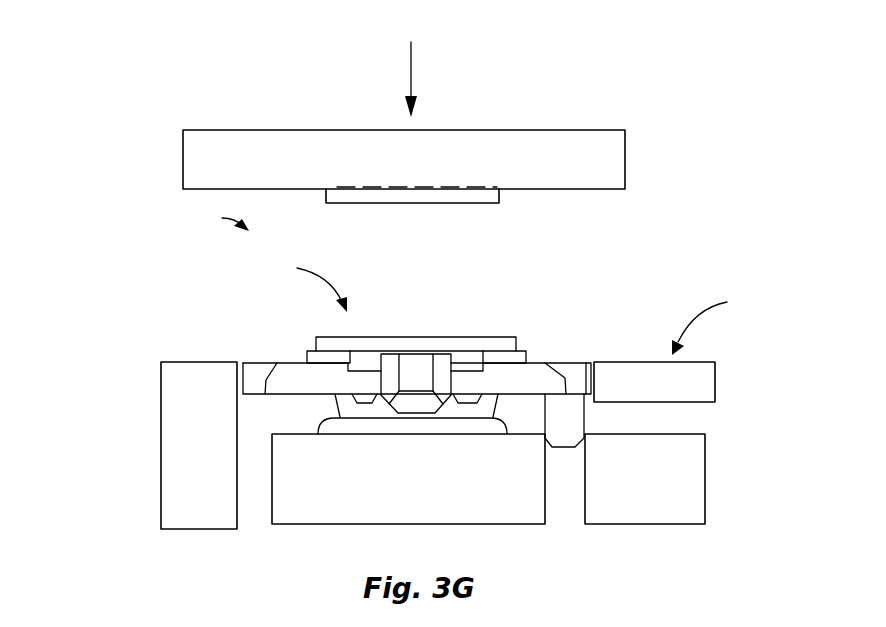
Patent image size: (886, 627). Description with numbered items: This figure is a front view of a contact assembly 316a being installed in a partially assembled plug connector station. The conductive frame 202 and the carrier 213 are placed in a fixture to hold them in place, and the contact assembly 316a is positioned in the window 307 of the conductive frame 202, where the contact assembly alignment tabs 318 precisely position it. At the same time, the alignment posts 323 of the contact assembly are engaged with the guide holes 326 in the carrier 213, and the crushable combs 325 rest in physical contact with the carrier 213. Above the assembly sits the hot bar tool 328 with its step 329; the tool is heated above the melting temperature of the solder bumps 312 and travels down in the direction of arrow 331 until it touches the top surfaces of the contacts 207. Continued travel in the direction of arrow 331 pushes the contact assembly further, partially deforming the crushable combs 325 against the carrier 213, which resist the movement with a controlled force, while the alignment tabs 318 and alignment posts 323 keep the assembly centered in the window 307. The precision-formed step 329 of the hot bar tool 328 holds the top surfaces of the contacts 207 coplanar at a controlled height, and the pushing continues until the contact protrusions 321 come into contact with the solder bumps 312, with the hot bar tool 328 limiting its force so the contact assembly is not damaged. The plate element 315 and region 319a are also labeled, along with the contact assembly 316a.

The hot bar tool 328 is at (432, 171).
The step 329 is at (448, 197).
The arrow 331 is at (411, 64).
The window 307 is at (215, 219).
The contacts 207 is at (362, 342).
The carrier plate 315 is at (297, 377).
The contact assembly 316a is at (289, 282).
The contact assembly alignment tabs 318 is at (247, 366).
The conductive frame 202 is at (208, 382).
The support region 319a is at (728, 324).
The alignment posts 323 is at (568, 423).
The solder bumps 312 is at (452, 428).
The guide holes 326 is at (558, 518).
The carrier 213 is at (698, 497).
The crushable combs 325 is at (368, 397).
The contact protrusions 321 is at (348, 408).